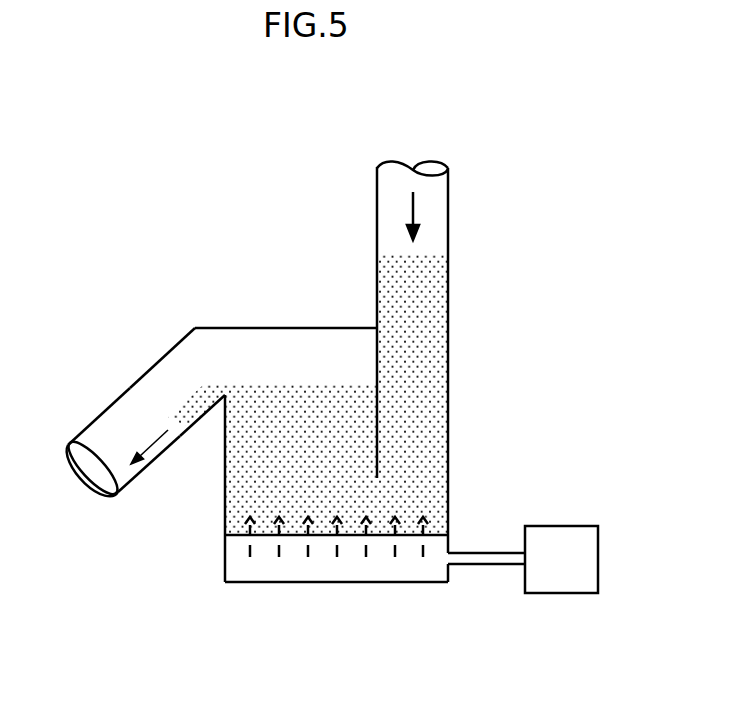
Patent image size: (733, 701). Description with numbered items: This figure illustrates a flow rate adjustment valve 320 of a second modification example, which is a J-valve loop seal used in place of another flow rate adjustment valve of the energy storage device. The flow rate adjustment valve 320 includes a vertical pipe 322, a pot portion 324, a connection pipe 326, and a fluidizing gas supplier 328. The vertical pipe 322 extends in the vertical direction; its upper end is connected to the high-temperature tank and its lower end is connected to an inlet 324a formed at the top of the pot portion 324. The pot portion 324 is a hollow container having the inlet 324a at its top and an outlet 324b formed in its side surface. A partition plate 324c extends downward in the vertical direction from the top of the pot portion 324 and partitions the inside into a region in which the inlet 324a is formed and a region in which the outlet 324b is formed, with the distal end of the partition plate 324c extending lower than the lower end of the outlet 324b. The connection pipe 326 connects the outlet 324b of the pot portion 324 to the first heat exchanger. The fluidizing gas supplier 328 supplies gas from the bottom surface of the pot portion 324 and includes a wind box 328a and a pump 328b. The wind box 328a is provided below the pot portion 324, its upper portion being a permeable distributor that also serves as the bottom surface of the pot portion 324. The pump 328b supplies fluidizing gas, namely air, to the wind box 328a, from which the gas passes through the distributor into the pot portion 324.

The flow rate adjustment valve 320 is at (233, 137).
The vertical pipe 322 is at (448, 214).
The pot portion 324 is at (255, 327).
The inlet 324a is at (377, 328).
The outlet 324b is at (222, 348).
The partition plate 324c is at (377, 347).
The connection pipe 326 is at (130, 382).
The fluidizing gas supplier 328 is at (498, 523).
The wind box 328a is at (410, 583).
The pump 328b is at (562, 593).